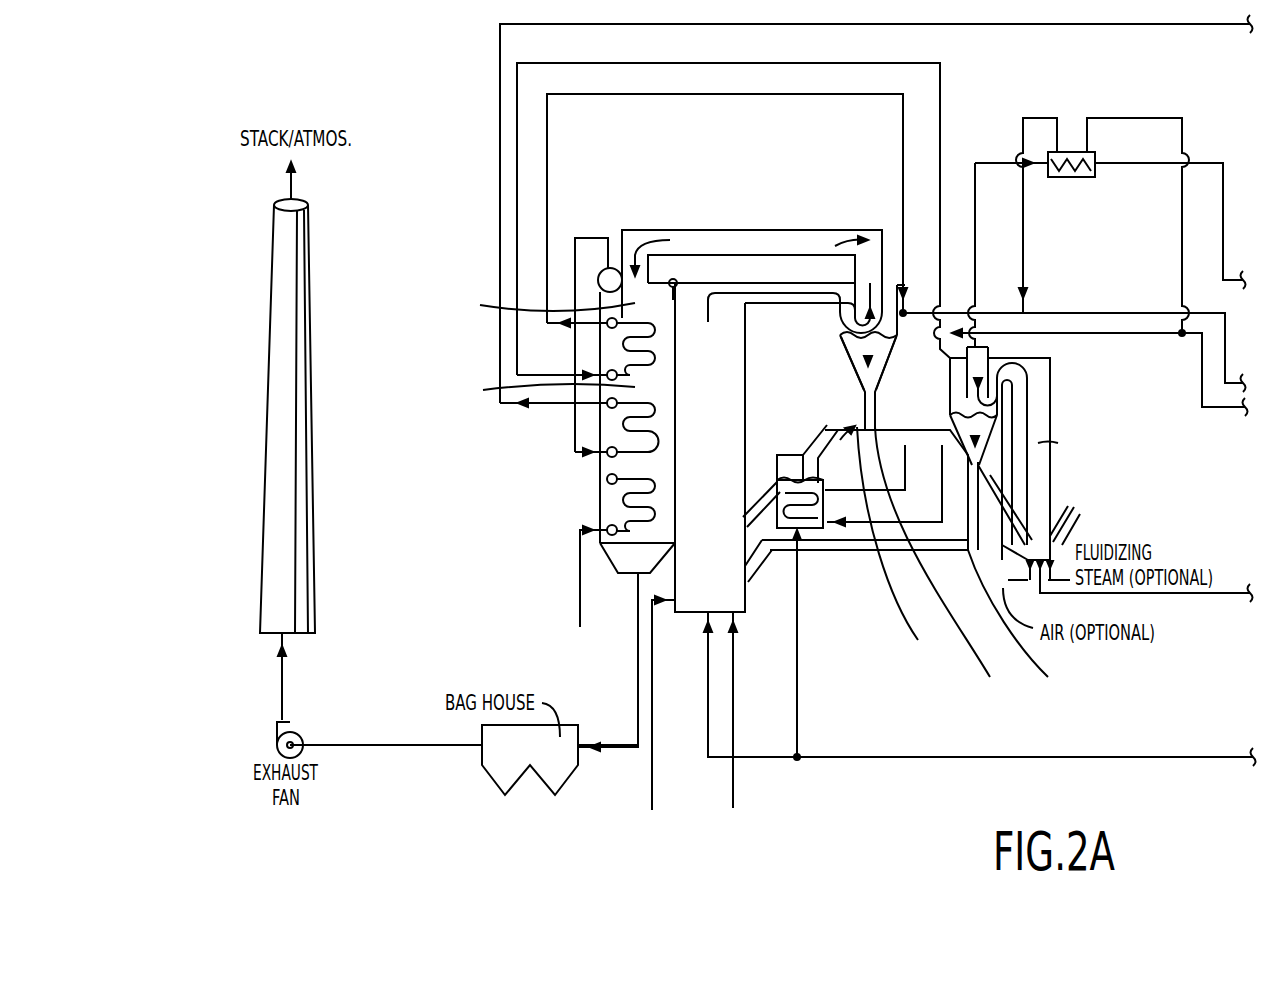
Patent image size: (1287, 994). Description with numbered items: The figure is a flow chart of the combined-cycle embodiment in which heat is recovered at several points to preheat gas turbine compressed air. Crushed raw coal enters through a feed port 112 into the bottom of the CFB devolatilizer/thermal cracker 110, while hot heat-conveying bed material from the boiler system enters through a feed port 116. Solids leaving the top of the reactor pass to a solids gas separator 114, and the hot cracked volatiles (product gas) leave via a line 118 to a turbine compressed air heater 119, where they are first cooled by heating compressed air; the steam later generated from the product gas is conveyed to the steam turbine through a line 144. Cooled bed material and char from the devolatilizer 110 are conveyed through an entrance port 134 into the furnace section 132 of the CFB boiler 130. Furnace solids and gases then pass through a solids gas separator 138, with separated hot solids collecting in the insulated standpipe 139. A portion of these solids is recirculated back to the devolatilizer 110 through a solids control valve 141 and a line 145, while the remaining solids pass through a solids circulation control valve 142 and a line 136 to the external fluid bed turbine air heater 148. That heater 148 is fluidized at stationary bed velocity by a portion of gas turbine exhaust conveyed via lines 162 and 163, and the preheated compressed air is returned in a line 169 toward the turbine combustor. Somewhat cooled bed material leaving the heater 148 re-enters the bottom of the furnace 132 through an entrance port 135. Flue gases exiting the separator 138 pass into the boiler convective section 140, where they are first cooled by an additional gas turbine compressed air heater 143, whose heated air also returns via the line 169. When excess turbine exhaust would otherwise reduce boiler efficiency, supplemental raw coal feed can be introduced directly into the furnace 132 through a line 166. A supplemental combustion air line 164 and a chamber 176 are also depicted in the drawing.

The CFB devolatilizer/thermal cracker 110 is at (1045, 415).
The feed port 112 is at (1072, 530).
The solids gas separator 114 is at (1000, 358).
The feed port 116 is at (997, 512).
The line 118 is at (977, 117).
The turbine compressed air heater 119 is at (1085, 150).
The CFB boiler 130 is at (676, 281).
The CFB boiler furnace section 132 is at (728, 367).
The entrance port 134 is at (753, 578).
The entrance port 135 is at (765, 477).
The line 136 is at (818, 430).
The solids gas separator 138 is at (838, 316).
The insulated standpipe 139 is at (862, 393).
The boiler convective section 140 is at (607, 305).
The solids control valve 141 is at (897, 412).
The solids circulation control valve 142 is at (841, 444).
The gas turbine compressed air heater 143 is at (620, 360).
The line 144 is at (500, 46).
The line 145 is at (928, 422).
The external fluid bed turbine air heater 148 is at (823, 510).
The line 162 is at (940, 757).
The line 163 is at (797, 713).
The supplemental combustion air line 164 is at (733, 782).
The line 166 is at (668, 730).
The line 169 is at (1107, 335).
The chamber 176 is at (970, 502).